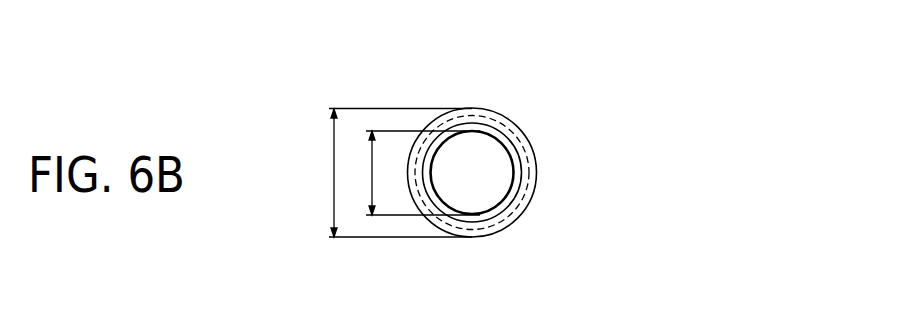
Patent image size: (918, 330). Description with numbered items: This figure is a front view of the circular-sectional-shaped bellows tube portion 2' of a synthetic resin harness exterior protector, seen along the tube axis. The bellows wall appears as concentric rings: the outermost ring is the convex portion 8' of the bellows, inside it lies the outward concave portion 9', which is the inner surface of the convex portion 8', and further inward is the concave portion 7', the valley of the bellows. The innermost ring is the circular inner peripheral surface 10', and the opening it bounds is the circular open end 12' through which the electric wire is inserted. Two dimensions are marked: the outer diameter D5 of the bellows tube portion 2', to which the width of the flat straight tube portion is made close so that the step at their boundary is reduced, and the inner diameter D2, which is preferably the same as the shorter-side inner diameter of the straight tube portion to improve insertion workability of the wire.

The circular-sectional-shaped bellows tube portion 2' is at (518, 182).
The convex portion 8' is at (508, 172).
The outward concave portion 9' is at (521, 173).
The concave portion 7' is at (512, 188).
The circular inner peripheral surface 10' is at (472, 172).
The circular open end 12' is at (494, 216).
The outer diameter D5 is at (333, 185).
The inner diameter D2 is at (371, 185).